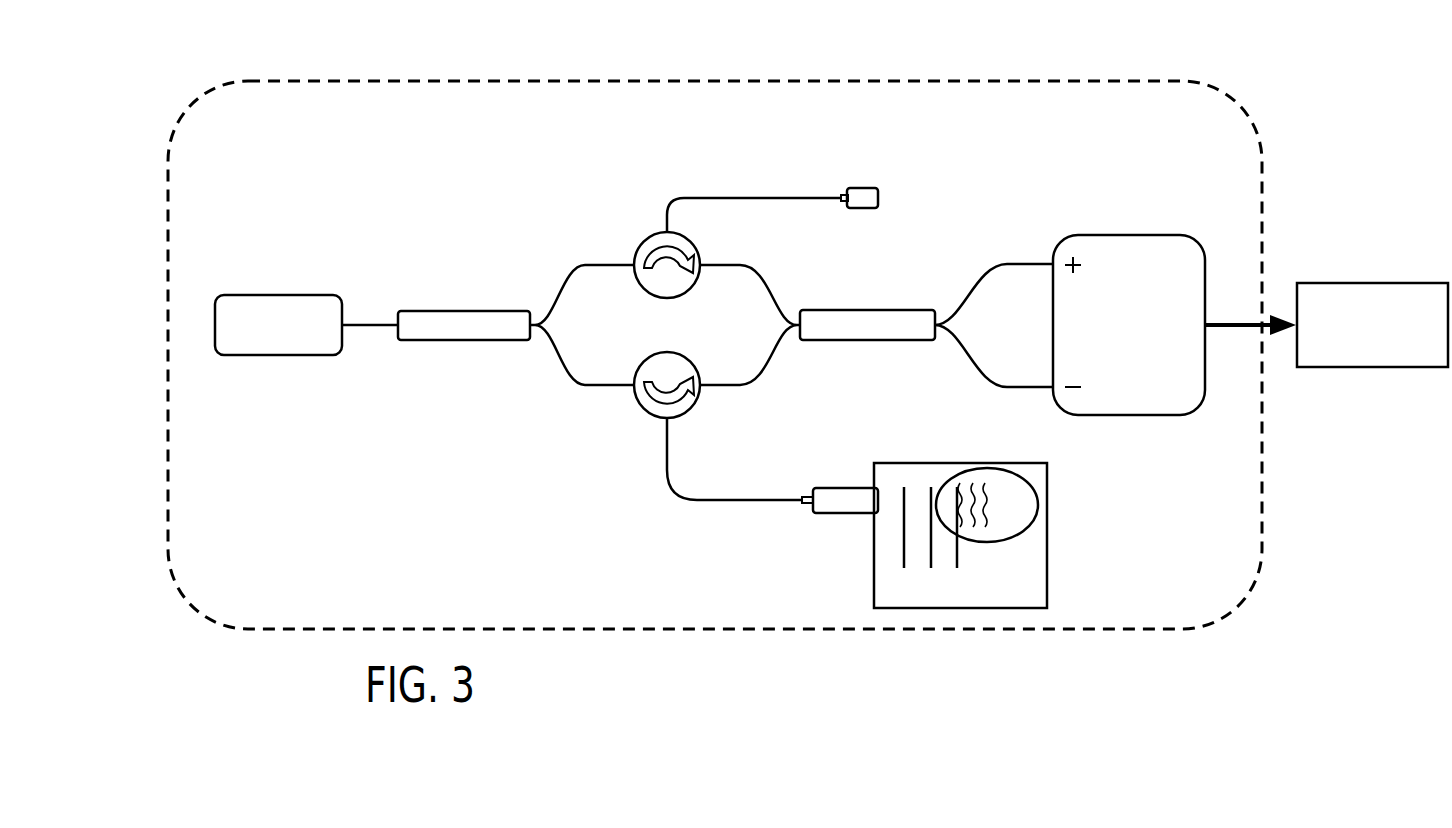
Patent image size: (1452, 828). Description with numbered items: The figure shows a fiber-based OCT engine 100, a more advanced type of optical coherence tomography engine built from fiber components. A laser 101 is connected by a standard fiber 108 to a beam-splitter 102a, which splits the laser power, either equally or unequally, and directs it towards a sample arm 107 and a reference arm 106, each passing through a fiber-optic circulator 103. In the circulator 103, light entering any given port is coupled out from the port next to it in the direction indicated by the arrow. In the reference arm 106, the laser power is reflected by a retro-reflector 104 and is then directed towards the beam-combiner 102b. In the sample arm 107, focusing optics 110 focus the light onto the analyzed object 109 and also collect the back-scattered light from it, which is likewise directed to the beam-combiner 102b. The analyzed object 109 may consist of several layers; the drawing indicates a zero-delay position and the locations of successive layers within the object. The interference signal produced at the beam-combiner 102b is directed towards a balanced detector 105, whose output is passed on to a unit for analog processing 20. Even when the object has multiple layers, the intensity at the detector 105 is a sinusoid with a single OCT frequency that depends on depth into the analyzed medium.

The fiber-based OCT engine 100 is at (715, 355).
The laser 101 is at (278, 325).
The beam-splitter 102a is at (516, 325).
The beam-combiner 102b is at (876, 325).
The fiber-optic circulator 103 is at (667, 325).
The retro-reflector 104 is at (861, 183).
The balanced detector 105 is at (1129, 325).
The reference arm 106 is at (754, 201).
The sample arm 107 is at (734, 476).
The standard fiber 108 is at (372, 316).
The analyzed object 109 is at (981, 535).
The focusing optics 110 is at (840, 522).
The unit for analog processing 20 is at (1326, 325).